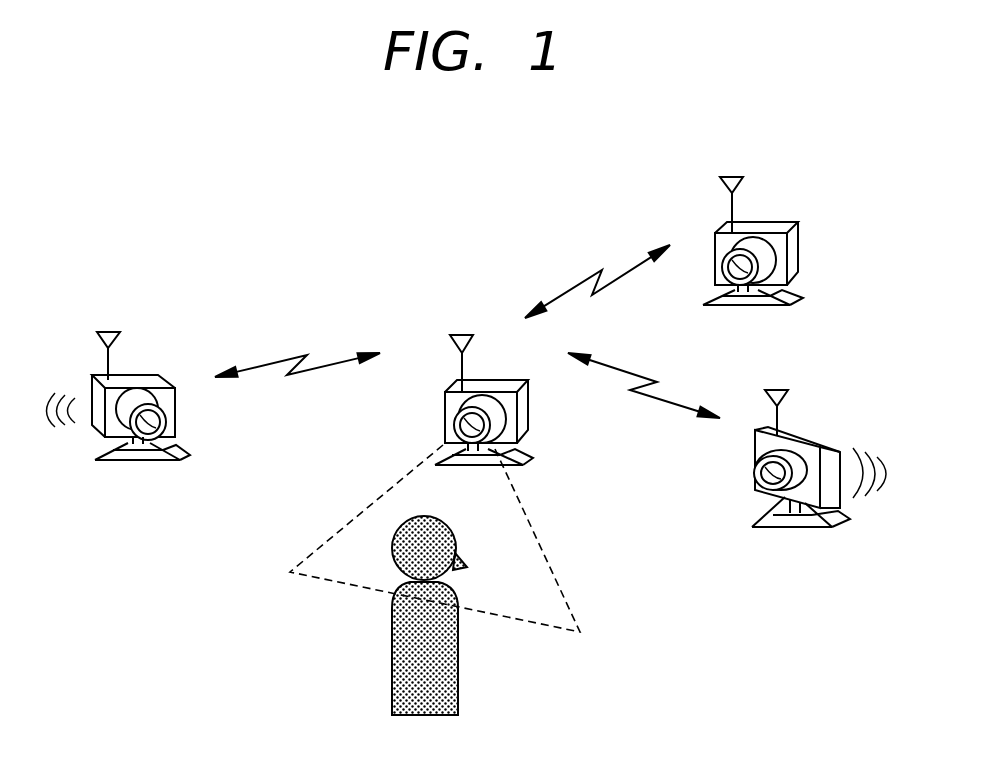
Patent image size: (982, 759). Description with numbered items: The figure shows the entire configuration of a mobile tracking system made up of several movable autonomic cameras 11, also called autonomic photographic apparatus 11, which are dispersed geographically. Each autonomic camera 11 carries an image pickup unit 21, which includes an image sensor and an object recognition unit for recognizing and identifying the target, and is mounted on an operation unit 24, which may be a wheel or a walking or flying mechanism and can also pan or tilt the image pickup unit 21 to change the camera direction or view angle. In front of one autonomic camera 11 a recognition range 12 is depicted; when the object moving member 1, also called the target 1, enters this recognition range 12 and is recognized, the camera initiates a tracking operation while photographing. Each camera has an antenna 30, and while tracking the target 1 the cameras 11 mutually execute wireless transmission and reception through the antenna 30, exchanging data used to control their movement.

The object moving member 1 is at (390, 662).
The autonomic camera 11 is at (467, 348).
The recognition range 12 is at (540, 538).
The image pickup unit 21 is at (163, 420).
The operation unit 24 is at (140, 458).
The antenna 30 is at (105, 332).